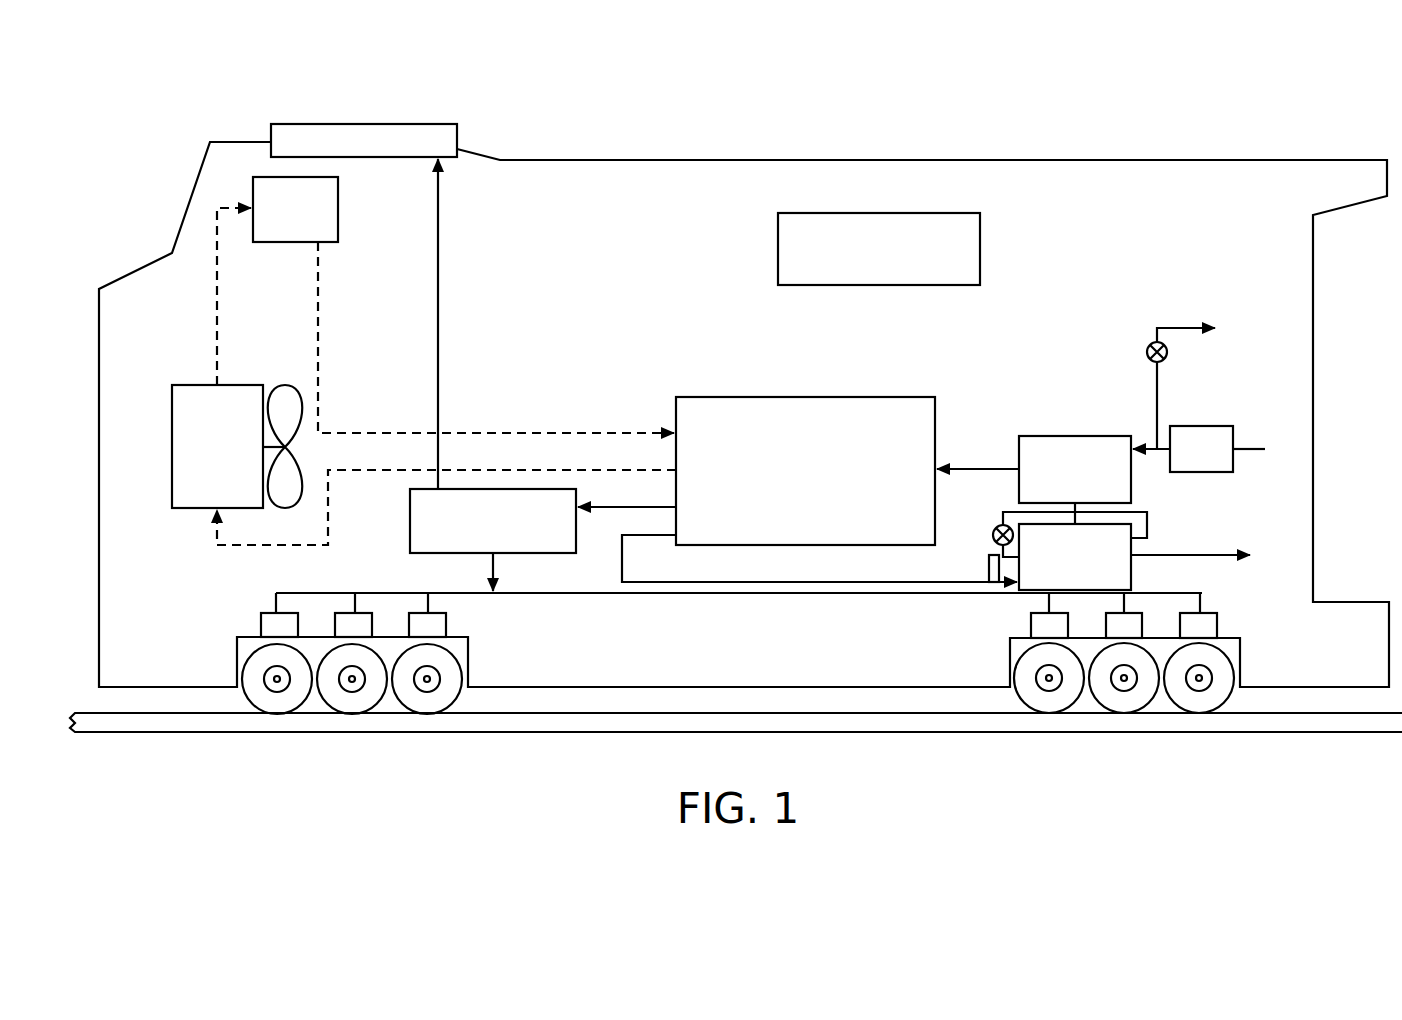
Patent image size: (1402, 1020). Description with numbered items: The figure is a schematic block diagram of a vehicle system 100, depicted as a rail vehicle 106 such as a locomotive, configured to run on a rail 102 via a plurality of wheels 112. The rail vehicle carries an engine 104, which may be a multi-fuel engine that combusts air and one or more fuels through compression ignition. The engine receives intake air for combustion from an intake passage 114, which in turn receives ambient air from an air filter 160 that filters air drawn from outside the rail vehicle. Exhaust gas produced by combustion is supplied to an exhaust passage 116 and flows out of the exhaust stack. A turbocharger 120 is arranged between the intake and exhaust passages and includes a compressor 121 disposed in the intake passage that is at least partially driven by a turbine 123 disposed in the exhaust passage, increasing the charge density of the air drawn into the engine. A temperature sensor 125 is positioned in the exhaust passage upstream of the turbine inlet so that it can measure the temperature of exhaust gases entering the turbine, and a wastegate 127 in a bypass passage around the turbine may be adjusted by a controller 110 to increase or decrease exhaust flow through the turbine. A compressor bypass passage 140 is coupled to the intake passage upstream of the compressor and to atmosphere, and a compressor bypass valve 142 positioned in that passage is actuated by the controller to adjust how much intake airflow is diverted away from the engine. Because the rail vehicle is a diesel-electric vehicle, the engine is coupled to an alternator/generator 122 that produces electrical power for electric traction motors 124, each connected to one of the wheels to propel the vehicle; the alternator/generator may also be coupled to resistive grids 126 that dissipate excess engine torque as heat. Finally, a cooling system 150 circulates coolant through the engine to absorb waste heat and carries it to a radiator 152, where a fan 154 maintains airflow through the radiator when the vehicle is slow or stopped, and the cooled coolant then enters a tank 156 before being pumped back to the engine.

The vehicle system 100 is at (1212, 96).
The rail 102 is at (1313, 732).
The engine 104 is at (787, 494).
The rail vehicle 106 is at (1050, 160).
The controller 110 is at (980, 219).
The wheels 112 is at (450, 668).
The intake passage 114 is at (995, 469).
The exhaust passage 116 is at (640, 536).
The turbocharger 120 is at (1078, 413).
The compressor 121 is at (1057, 481).
The alternator/generator 122 is at (410, 521).
The turbine 123 is at (1057, 568).
The electric traction motors 124 is at (447, 624).
The temperature sensor 125 is at (989, 556).
The resistive grids 126 is at (437, 124).
The wastegate 127 is at (995, 528).
The compressor bypass passage 140 is at (1160, 326).
The compressor bypass valve 142 is at (1146, 353).
The cooling system 150 is at (189, 337).
The radiator 152 is at (199, 458).
The fan 154 is at (290, 384).
The tank 156 is at (277, 220).
The air filter 160 is at (1184, 460).